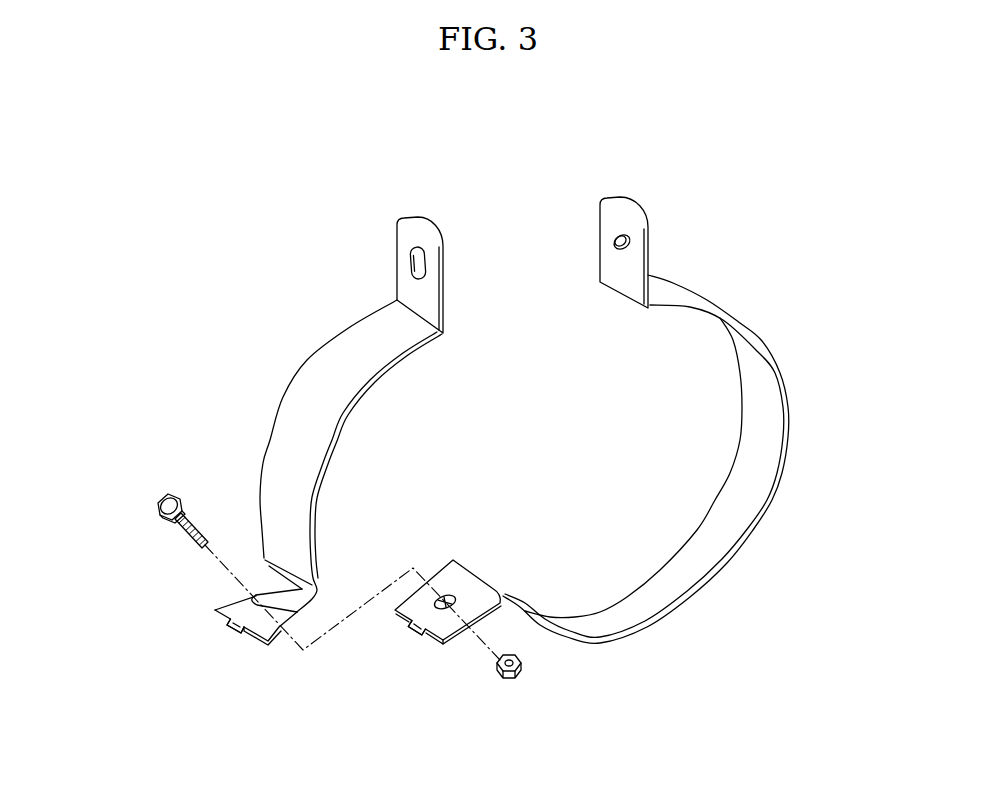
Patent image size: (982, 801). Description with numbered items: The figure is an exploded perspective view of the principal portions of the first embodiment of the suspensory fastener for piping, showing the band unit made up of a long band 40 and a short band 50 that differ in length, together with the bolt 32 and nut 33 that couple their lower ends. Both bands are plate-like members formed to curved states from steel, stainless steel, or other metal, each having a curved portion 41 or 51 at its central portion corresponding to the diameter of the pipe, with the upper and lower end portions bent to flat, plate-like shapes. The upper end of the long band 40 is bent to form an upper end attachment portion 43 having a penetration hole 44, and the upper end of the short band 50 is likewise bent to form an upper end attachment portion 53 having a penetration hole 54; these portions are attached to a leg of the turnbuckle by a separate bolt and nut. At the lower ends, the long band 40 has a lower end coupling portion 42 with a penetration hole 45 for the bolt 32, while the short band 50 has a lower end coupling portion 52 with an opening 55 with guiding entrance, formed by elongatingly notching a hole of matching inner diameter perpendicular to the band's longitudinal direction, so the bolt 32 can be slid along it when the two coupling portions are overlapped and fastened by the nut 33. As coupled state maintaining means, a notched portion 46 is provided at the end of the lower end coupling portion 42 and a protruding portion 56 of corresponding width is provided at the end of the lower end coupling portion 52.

The bolt 32 is at (168, 507).
The nut 33 is at (517, 676).
The long band 40 is at (613, 451).
The curved portion 41 is at (782, 455).
The lower end coupling portion 42 is at (443, 627).
The upper end attachment portion 43 is at (630, 270).
The penetration hole 44 is at (617, 238).
The penetration hole 45 is at (452, 597).
The notched portion 46 is at (420, 622).
The short band 50 is at (296, 447).
The curved portion 51 is at (330, 368).
The lower end coupling portion 52 is at (238, 603).
The upper end attachment portion 53 is at (407, 286).
The penetration hole 54 is at (410, 262).
The opening with guiding entrance 55 is at (268, 602).
The protruding portion 56 is at (240, 632).